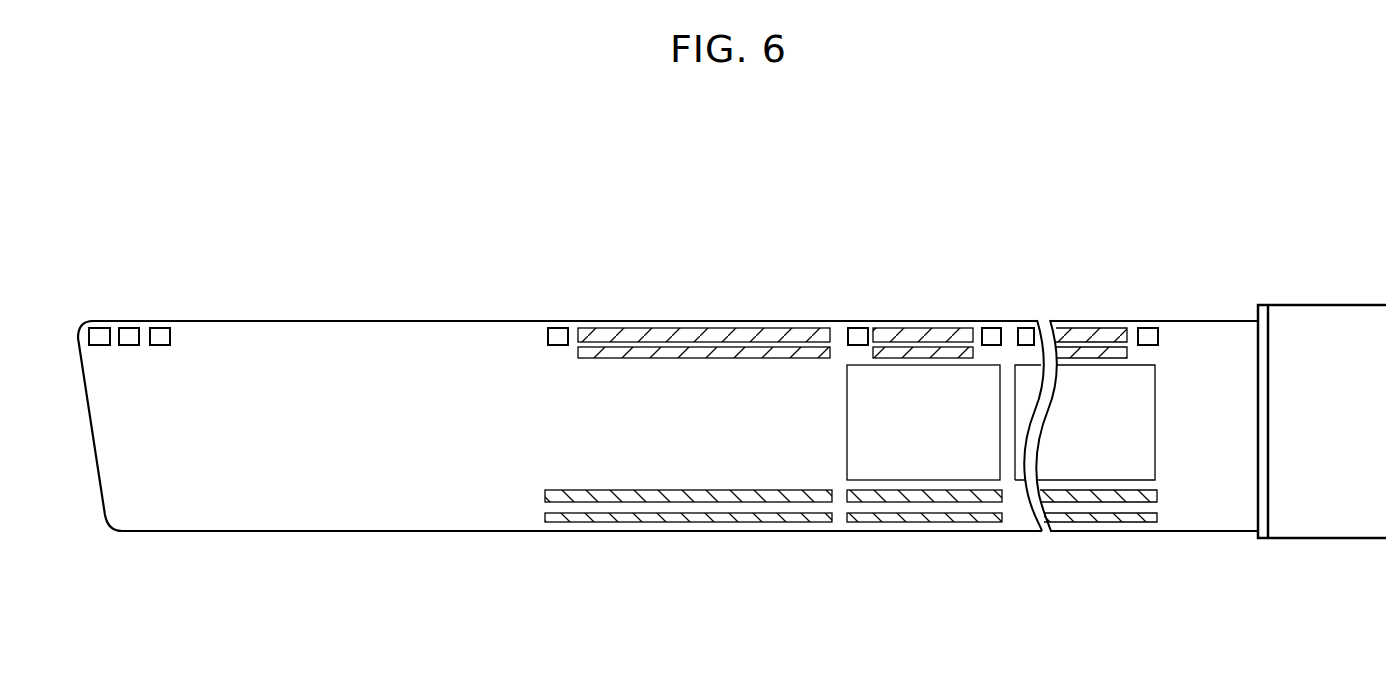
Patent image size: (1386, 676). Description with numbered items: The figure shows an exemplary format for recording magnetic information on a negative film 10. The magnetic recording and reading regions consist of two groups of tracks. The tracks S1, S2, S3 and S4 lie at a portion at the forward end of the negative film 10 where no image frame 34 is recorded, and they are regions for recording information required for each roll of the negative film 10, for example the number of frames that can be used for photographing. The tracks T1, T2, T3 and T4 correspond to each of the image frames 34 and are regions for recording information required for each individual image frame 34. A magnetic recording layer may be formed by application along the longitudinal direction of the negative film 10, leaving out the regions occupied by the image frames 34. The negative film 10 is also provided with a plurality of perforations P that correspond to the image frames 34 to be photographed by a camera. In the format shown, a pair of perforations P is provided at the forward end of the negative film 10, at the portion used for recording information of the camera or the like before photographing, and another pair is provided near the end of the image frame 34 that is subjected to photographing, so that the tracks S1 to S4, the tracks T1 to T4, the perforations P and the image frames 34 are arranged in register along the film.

The negative film 10 is at (393, 532).
The perforations P is at (103, 334).
The track S1 is at (670, 328).
The track S2 is at (662, 358).
The track S3 is at (664, 490).
The track S4 is at (688, 522).
The track T1 is at (897, 328).
The track T2 is at (907, 358).
The track T3 is at (895, 490).
The track T4 is at (905, 522).
The image frame 34 is at (950, 385).